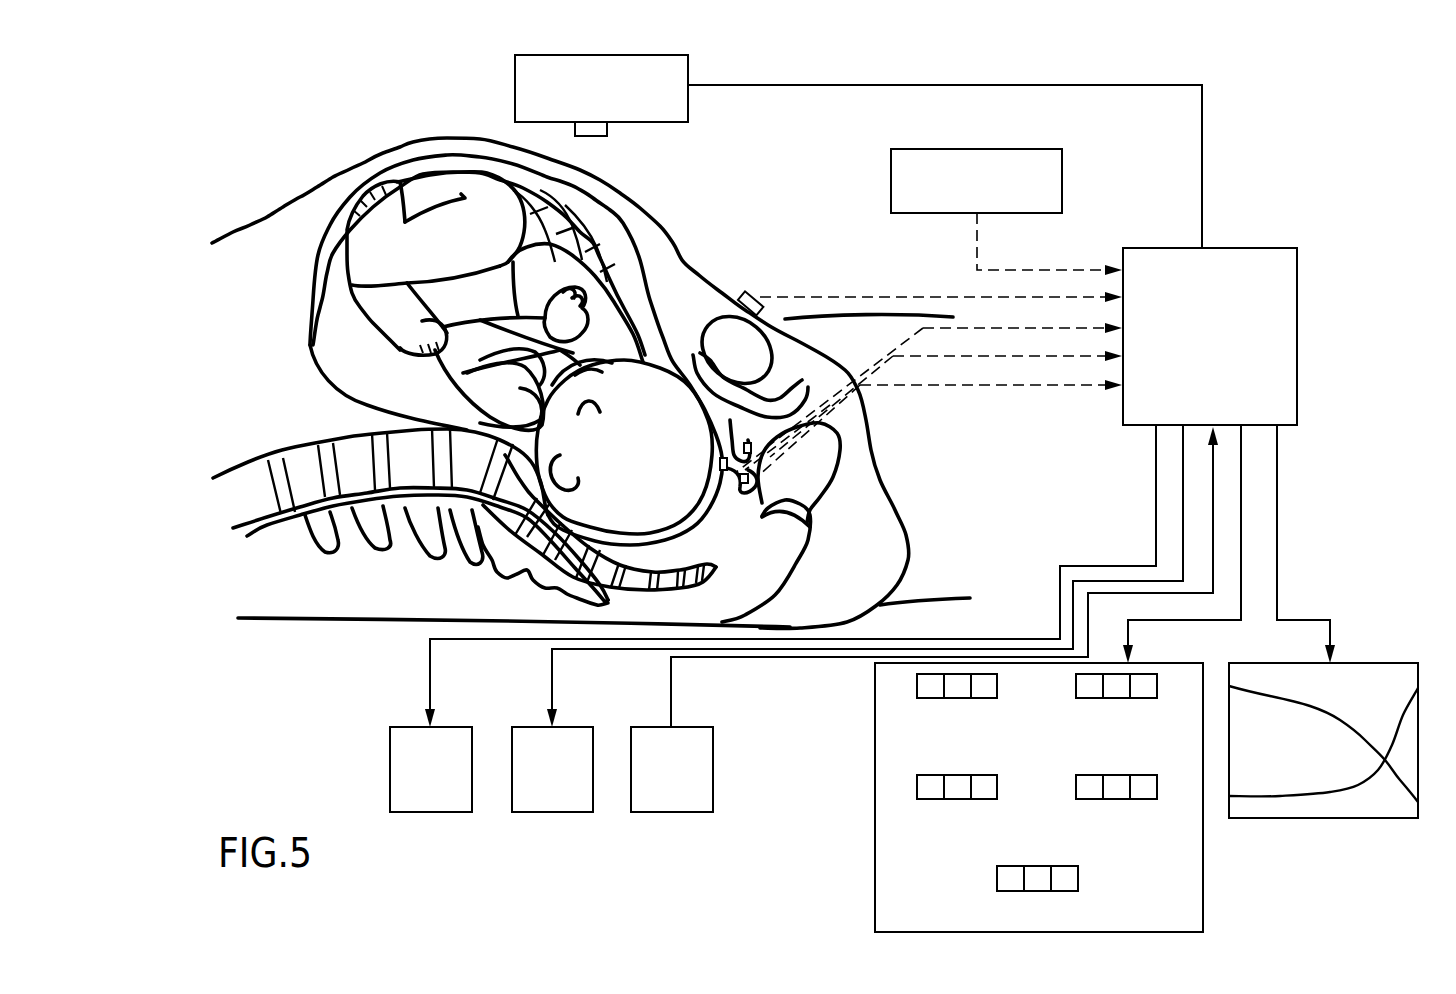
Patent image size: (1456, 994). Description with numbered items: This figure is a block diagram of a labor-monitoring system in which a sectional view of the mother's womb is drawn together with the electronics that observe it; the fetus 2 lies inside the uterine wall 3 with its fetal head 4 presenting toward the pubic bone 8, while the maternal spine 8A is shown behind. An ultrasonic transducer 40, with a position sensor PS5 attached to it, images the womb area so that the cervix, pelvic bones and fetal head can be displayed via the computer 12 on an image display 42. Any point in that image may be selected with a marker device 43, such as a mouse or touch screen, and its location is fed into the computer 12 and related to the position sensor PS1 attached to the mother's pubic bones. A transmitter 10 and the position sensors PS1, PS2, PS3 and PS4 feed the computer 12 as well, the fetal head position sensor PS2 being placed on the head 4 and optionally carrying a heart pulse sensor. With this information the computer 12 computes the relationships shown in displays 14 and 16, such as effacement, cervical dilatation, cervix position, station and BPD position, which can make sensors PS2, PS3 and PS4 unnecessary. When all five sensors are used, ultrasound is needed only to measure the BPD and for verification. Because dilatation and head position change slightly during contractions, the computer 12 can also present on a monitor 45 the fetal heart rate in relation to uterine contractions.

The fetus 2 is at (555, 265).
The uterine wall 3 is at (622, 248).
The fetal head 4 is at (642, 497).
The pubic bone 8 is at (720, 333).
The maternal spine 8A is at (457, 477).
The transmitter 10 is at (1062, 188).
The computer 12 is at (1277, 248).
The display 14 is at (1203, 867).
The display 16 is at (1377, 662).
The ultrasonic transducer 40 is at (515, 84).
The image display 42 is at (535, 812).
The marker device 43 is at (660, 812).
The monitor 45 is at (433, 812).
The position sensor PS1 is at (743, 293).
The fetal head position sensor PS2 is at (722, 462).
The position sensor PS3 is at (751, 446).
The position sensor PS4 is at (746, 483).
The position sensor PS5 is at (607, 128).